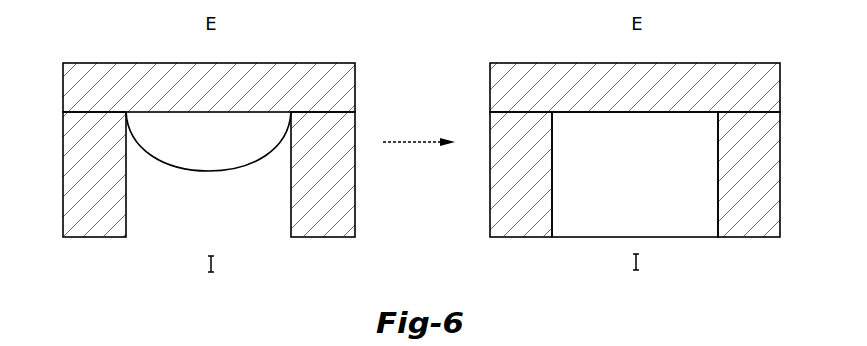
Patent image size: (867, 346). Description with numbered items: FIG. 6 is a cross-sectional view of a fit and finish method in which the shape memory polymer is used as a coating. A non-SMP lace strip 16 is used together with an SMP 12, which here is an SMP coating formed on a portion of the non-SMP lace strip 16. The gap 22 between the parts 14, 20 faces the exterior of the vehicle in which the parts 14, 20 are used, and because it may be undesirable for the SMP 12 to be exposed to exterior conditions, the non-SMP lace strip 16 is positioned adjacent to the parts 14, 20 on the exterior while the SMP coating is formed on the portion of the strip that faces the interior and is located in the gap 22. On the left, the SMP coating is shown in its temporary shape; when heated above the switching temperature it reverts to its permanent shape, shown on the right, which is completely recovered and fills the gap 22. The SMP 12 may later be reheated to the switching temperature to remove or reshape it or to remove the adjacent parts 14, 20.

The SMP 12 is at (206, 162).
The part 14 is at (90, 232).
The non-SMP lace strip 16 is at (317, 70).
The part 20 is at (318, 232).
The gap 22 is at (160, 250).